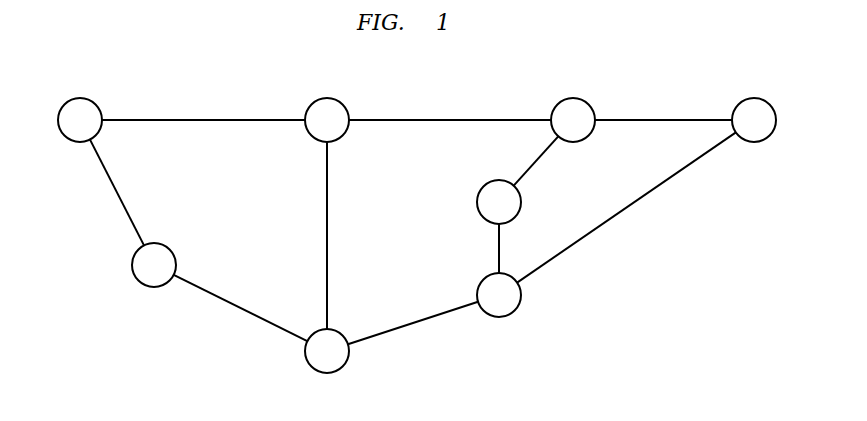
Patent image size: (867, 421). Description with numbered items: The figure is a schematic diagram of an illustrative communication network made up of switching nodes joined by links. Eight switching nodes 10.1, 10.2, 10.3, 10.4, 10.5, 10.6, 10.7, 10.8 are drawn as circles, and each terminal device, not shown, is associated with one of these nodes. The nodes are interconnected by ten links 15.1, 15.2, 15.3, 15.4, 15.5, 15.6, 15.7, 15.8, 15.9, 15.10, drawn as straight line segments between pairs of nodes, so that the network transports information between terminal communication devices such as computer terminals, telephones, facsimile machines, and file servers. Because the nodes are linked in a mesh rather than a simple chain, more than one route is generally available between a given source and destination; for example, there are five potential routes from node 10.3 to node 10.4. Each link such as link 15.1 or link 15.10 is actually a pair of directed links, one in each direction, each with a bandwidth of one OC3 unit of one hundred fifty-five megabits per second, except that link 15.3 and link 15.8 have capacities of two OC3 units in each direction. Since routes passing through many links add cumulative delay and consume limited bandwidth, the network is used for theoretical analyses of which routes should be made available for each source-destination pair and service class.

The switching node 10.1 is at (167, 247).
The switching node 10.2 is at (91, 101).
The switching node 10.3 is at (339, 102).
The switching node 10.4 is at (585, 102).
The switching node 10.5 is at (760, 112).
The switching node 10.6 is at (481, 215).
The switching node 10.7 is at (486, 313).
The switching node 10.8 is at (343, 335).
The link 15.1 is at (115, 190).
The link 15.2 is at (197, 119).
The link 15.3 is at (452, 119).
The link 15.4 is at (644, 119).
The link 15.5 is at (537, 160).
The link 15.6 is at (499, 248).
The link 15.7 is at (641, 198).
The link 15.8 is at (380, 334).
The link 15.9 is at (327, 205).
The link 15.10 is at (240, 308).